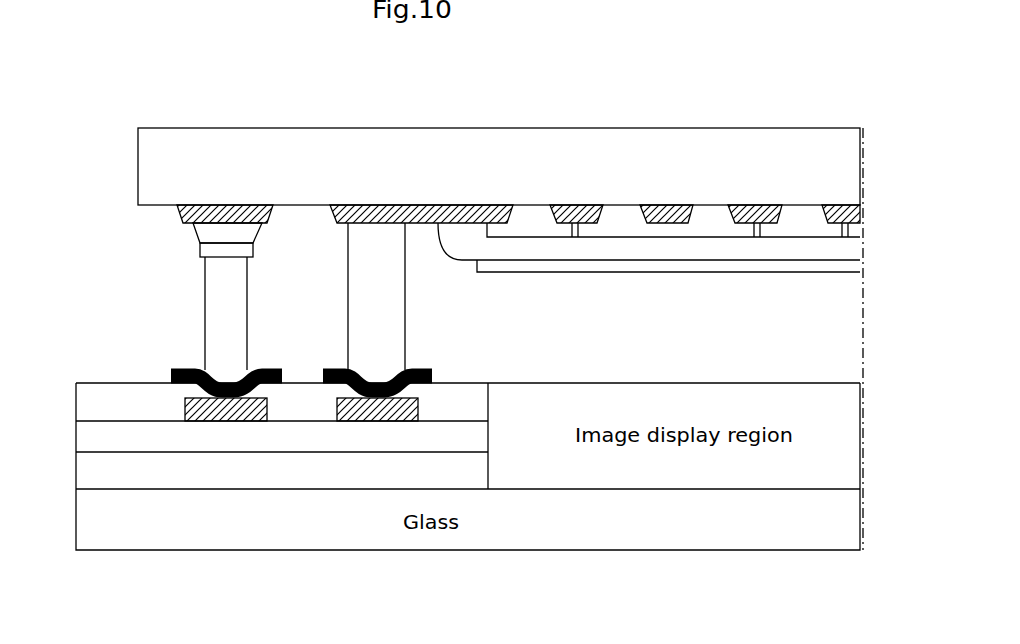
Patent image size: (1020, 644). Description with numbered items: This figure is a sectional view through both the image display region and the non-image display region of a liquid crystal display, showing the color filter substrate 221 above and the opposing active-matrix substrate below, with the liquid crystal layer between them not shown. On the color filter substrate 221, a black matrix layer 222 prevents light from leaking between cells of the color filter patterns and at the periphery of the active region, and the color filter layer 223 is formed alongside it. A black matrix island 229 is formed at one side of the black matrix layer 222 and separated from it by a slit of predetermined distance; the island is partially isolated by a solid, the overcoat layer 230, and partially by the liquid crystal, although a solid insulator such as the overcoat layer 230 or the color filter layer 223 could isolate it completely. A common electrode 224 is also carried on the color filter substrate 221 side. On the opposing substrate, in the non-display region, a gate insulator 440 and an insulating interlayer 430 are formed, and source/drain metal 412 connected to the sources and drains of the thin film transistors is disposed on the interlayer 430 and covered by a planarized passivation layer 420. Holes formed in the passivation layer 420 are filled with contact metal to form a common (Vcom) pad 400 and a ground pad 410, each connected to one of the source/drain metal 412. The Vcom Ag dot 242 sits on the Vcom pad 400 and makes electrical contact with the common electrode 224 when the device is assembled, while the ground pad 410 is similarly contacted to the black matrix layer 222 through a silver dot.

The color filter substrate 221 is at (150, 172).
The black matrix layer 222 is at (423, 205).
The color filter layer 223 is at (713, 205).
The common electrode 224 is at (203, 253).
The black matrix island 229 is at (227, 205).
The overcoat layer 230 is at (200, 235).
The Vcom Ag dot 242 is at (213, 328).
The common (Vcom) pad 400 is at (187, 363).
The ground pad 410 is at (420, 367).
The source/drain metal 412 is at (383, 421).
The passivation layer 420 is at (83, 404).
The insulating interlayer 430 is at (83, 441).
The gate insulator 440 is at (83, 474).